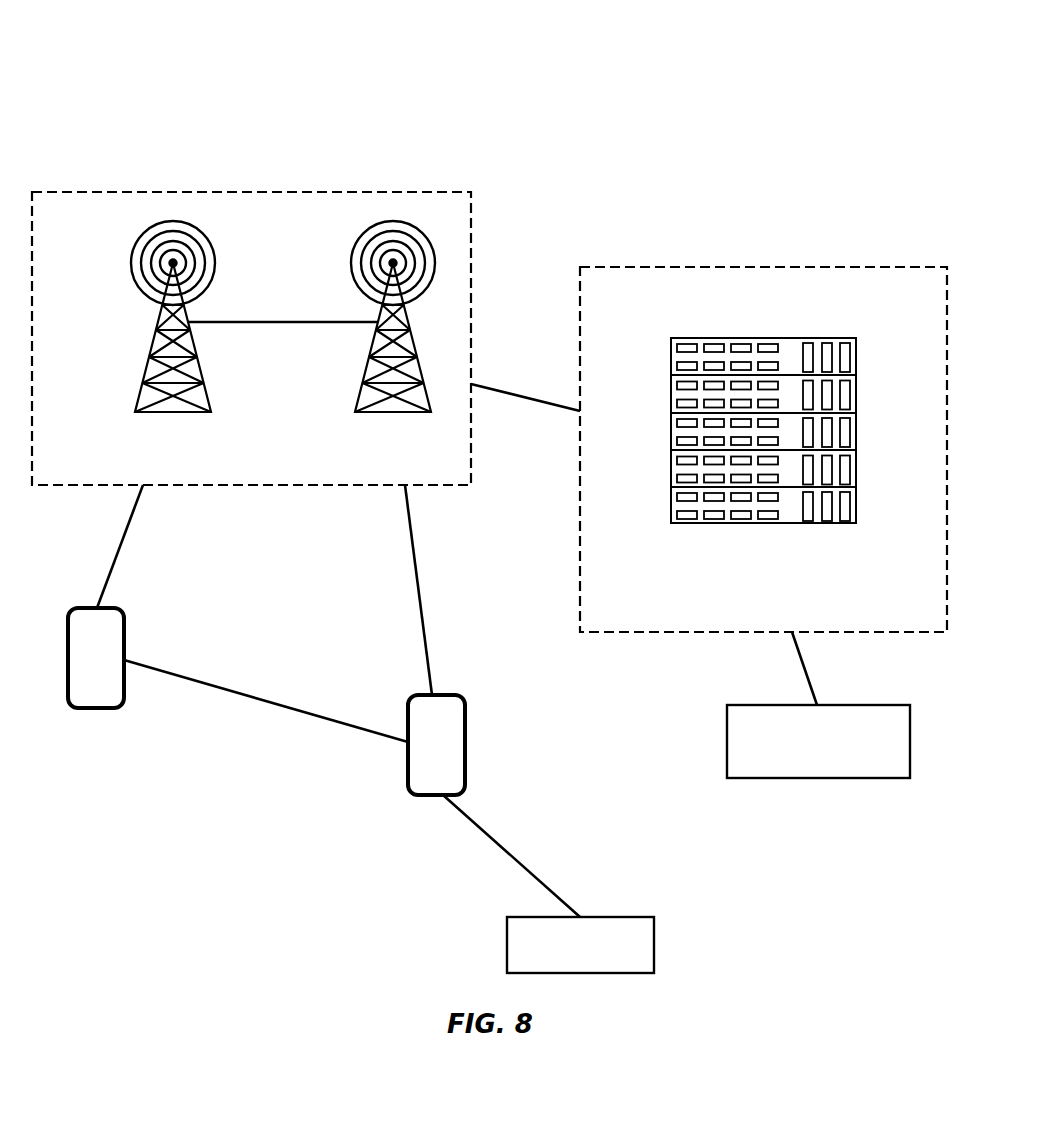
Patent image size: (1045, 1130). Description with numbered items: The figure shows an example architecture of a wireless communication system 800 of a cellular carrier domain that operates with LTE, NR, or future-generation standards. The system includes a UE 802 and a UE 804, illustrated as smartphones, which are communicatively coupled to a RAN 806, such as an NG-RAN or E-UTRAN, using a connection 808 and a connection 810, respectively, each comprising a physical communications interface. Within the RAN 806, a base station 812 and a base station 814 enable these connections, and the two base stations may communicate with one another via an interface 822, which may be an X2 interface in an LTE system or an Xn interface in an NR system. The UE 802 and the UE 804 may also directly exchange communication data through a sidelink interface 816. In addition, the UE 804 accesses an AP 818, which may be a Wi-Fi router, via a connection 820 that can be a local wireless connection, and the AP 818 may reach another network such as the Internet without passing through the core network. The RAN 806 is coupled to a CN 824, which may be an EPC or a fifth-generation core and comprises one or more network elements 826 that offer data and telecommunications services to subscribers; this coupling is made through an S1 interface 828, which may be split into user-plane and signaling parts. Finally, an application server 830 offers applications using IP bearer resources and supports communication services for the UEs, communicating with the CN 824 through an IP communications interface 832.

The wireless communication system 800 is at (47, 58).
The UE 802 is at (94, 710).
The UE 804 is at (466, 744).
The RAN 806 is at (246, 191).
The connection 808 is at (118, 547).
The connection 810 is at (422, 590).
The base station 812 is at (148, 364).
The base station 814 is at (366, 364).
The sidelink interface 816 is at (243, 691).
The AP 818 is at (655, 943).
The connection 820 is at (515, 861).
The interface 822 is at (266, 320).
The CN 824 is at (760, 265).
The network elements 826 is at (858, 357).
The S1 interface 828 is at (521, 394).
The application server 830 is at (726, 741).
The IP communications interface 832 is at (805, 664).